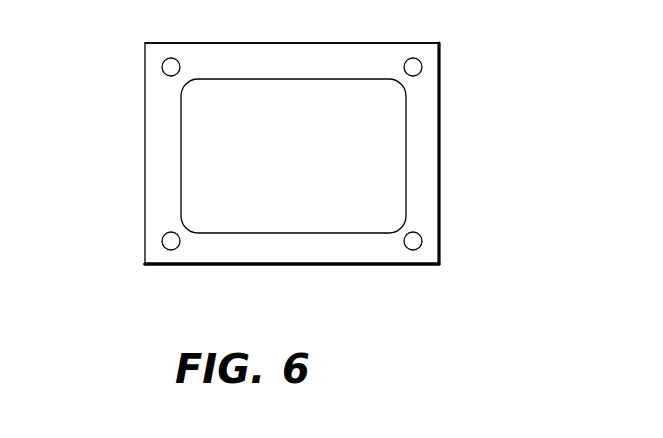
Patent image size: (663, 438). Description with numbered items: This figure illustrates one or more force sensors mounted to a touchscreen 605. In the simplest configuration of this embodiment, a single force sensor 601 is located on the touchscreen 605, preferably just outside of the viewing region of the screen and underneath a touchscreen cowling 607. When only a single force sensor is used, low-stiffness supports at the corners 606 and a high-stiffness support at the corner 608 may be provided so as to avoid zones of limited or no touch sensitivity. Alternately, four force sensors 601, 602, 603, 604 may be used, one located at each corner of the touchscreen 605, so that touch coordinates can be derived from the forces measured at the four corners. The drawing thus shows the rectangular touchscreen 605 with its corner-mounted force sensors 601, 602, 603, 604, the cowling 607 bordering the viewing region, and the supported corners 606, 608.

The force sensor 601 is at (422, 67).
The force sensor 602 is at (162, 67).
The force sensor 603 is at (162, 241).
The force sensor 604 is at (422, 240).
The touchscreen 605 is at (318, 157).
The corners 606 is at (146, 43).
The touchscreen cowling 607 is at (423, 152).
The corner 608 is at (151, 260).